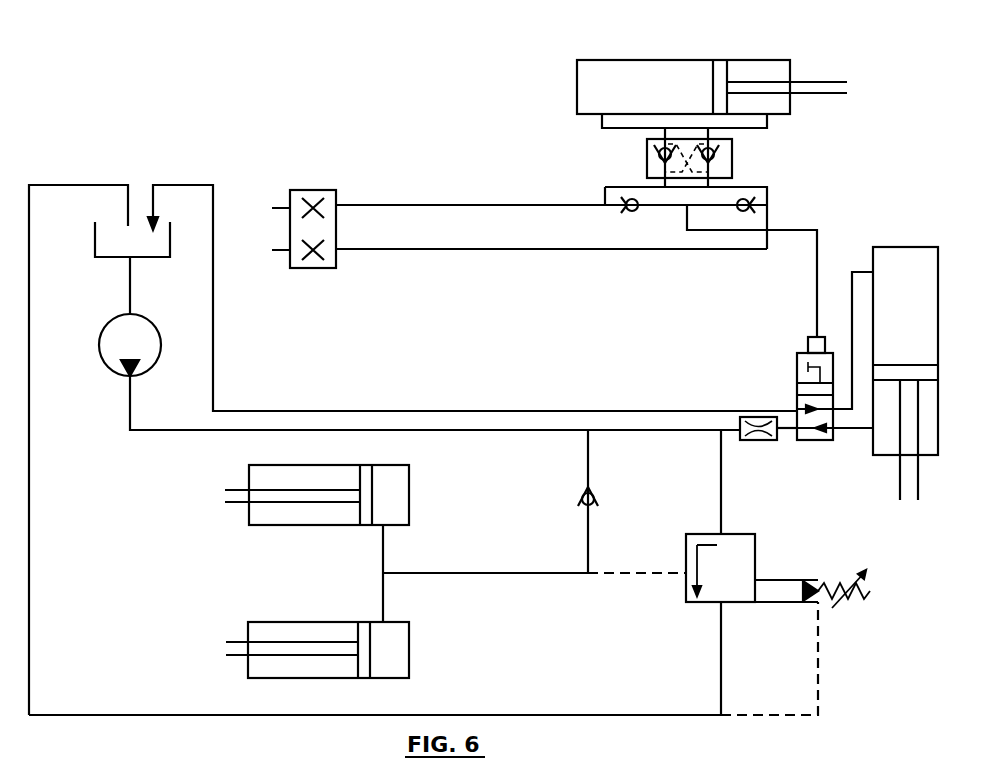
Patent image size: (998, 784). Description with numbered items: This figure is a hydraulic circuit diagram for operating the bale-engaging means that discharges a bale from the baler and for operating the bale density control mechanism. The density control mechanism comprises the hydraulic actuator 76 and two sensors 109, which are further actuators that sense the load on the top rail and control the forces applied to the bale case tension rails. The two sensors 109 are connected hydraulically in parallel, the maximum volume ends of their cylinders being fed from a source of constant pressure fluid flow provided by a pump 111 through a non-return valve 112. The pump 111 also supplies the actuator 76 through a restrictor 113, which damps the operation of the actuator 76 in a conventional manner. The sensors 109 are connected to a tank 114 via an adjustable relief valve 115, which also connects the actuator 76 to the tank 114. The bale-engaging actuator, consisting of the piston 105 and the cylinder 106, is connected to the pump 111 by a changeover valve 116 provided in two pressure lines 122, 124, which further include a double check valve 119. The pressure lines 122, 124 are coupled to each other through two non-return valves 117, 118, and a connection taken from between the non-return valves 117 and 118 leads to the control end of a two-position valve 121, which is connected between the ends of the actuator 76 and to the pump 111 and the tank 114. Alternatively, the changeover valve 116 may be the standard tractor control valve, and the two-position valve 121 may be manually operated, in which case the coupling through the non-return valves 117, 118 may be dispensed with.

The hydraulic actuator 76 is at (938, 322).
The piston 105 is at (818, 82).
The cylinder 106 is at (660, 60).
The sensors 109 is at (298, 525).
The pump 111 is at (153, 364).
The non-return valve 112 is at (594, 492).
The restrictor 113 is at (763, 440).
The tank 114 is at (158, 257).
The adjustable relief valve 115 is at (755, 556).
The changeover valve 116 is at (313, 190).
The non-return valve 117 is at (628, 212).
The non-return valve 118 is at (748, 198).
The double check valve 119 is at (732, 158).
The two-position valve 121 is at (797, 372).
The pressure line 122 is at (475, 205).
The pressure line 124 is at (510, 249).